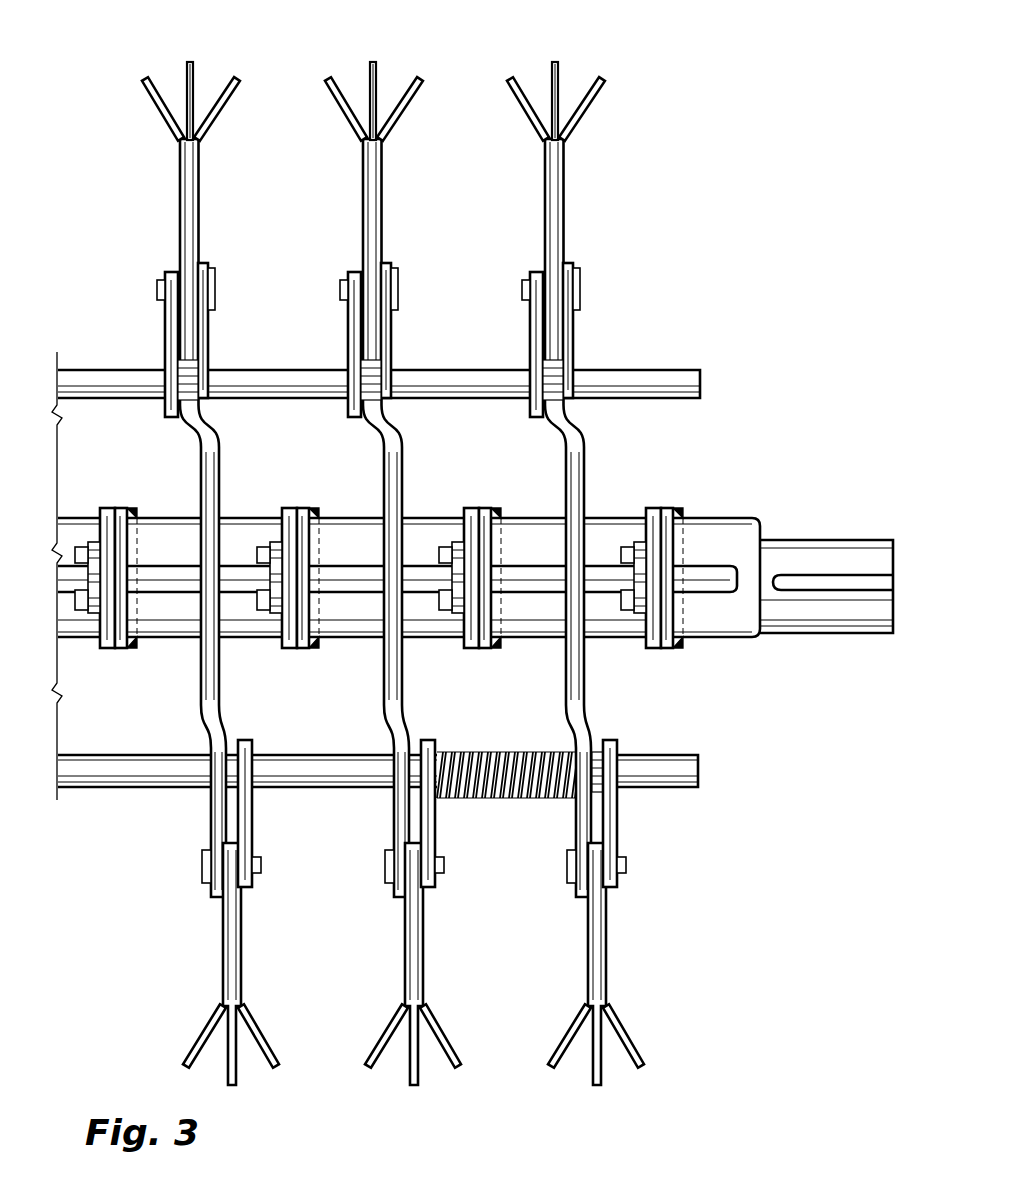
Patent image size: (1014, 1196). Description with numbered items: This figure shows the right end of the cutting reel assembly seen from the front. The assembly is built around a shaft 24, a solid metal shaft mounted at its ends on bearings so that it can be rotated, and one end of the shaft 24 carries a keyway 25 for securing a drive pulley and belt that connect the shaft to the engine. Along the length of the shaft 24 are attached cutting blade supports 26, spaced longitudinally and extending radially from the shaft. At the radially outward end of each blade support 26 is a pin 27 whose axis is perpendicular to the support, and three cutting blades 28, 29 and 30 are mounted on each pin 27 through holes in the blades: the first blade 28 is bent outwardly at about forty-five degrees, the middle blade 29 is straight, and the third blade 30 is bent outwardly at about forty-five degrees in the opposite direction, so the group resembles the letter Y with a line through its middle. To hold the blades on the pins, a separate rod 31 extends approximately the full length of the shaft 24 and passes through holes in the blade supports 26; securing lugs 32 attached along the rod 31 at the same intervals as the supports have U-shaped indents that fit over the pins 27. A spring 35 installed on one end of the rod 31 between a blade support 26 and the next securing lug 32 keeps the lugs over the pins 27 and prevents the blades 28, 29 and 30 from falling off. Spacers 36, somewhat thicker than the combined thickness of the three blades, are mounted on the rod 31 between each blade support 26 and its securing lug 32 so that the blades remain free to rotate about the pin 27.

The shaft 24 is at (792, 540).
The keyway 25 is at (885, 598).
The cutting blade support 26 is at (590, 470).
The pin 27 is at (205, 882).
The first cutting blade 28 is at (158, 102).
The middle cutting blade 29 is at (186, 64).
The third cutting blade 30 is at (222, 105).
The rod 31 is at (650, 380).
The securing lug 32 is at (248, 818).
The spring 35 is at (500, 752).
The spacer 36 is at (185, 380).